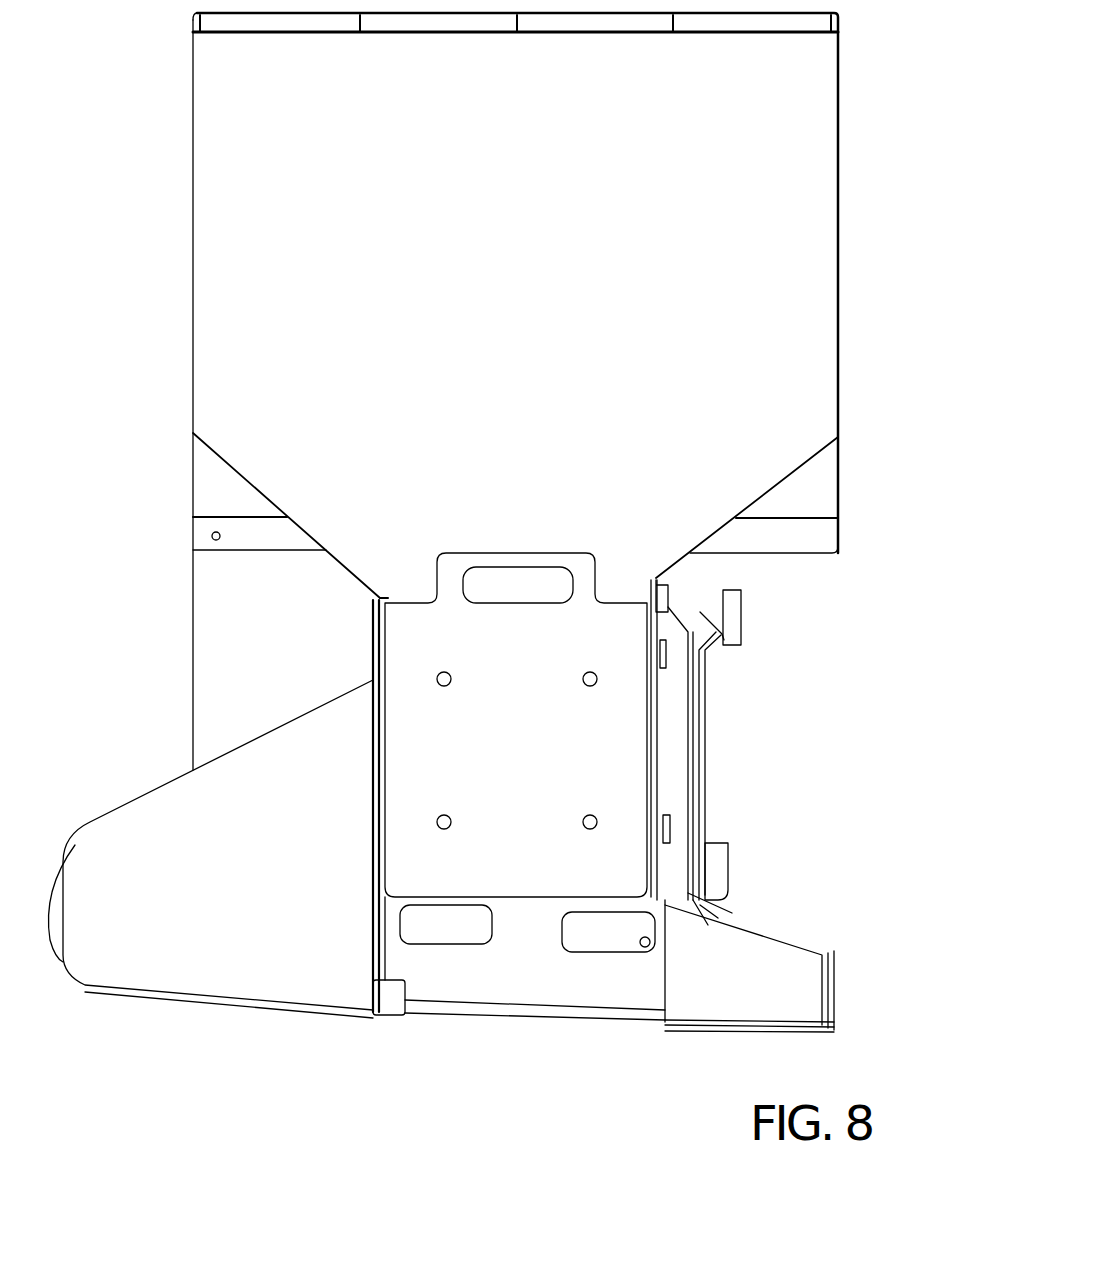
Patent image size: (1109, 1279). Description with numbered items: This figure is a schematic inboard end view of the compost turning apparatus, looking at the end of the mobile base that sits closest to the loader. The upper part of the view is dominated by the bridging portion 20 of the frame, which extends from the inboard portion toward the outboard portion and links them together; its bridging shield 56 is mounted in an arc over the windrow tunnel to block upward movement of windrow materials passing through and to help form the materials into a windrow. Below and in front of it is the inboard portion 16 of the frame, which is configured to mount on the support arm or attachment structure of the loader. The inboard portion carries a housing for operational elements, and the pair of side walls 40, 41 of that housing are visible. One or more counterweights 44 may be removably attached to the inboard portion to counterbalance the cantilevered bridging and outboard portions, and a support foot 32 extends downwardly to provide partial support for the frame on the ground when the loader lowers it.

The inboard portion 16 is at (402, 1038).
The bridging portion 20 is at (577, 391).
The support foot 32 is at (540, 978).
The side wall 40 is at (375, 645).
The side wall 41 is at (660, 702).
The counterweight 44 is at (612, 766).
The bridging shield 56 is at (773, 266).